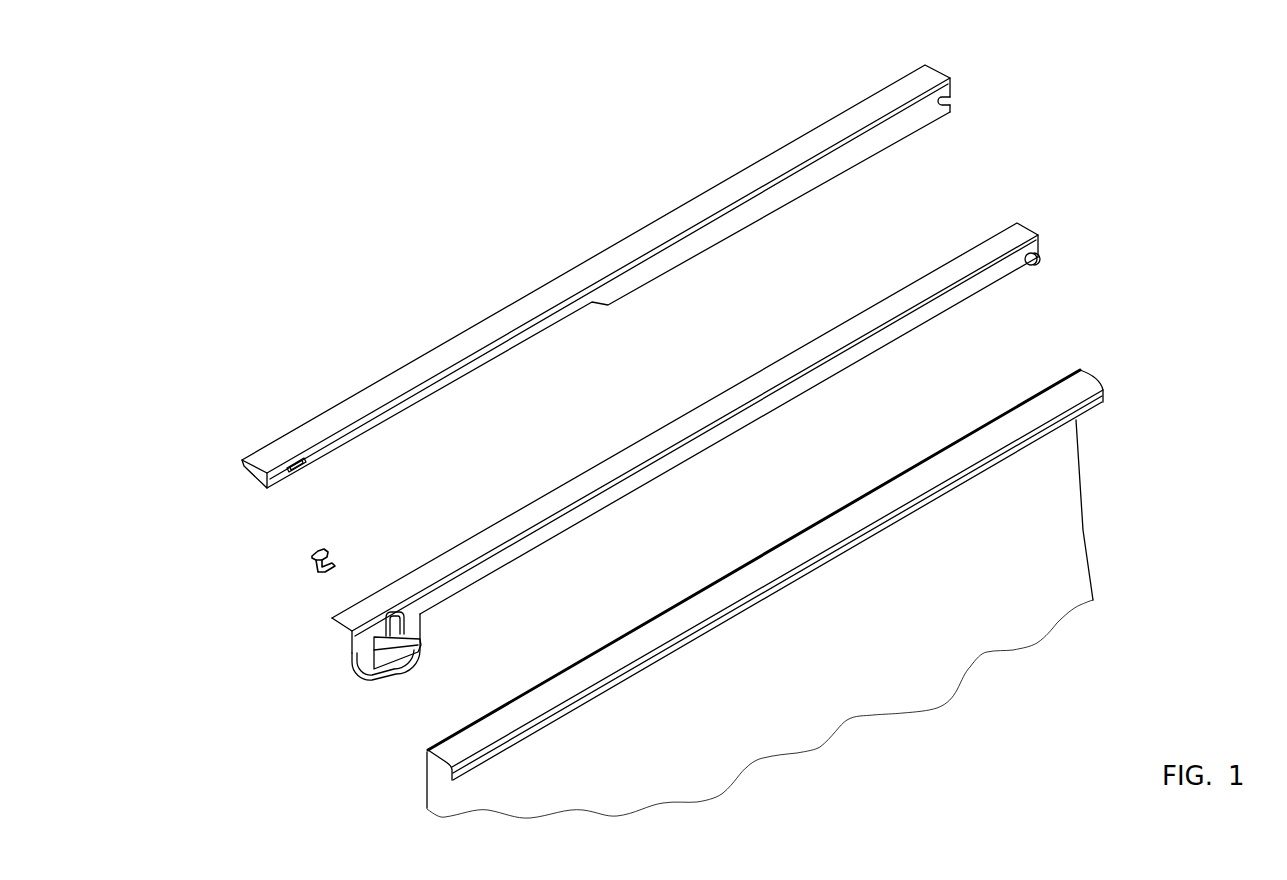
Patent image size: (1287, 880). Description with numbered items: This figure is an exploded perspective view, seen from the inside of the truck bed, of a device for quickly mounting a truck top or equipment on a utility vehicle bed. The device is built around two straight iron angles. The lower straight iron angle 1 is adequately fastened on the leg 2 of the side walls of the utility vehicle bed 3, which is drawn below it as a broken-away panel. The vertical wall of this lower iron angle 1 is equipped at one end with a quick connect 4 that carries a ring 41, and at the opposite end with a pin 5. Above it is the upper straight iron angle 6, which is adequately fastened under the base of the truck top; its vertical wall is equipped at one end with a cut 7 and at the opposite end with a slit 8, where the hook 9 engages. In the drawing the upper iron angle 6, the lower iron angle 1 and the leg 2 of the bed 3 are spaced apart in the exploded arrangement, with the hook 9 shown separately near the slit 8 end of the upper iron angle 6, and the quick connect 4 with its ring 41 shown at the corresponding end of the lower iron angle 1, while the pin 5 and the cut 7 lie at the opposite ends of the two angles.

The lower straight iron angle 1 is at (1015, 233).
The leg 2 is at (1077, 383).
The utility vehicle bed 3 is at (1030, 548).
The quick connect 4 is at (395, 652).
The ring 41 is at (382, 634).
The pin 5 is at (1040, 258).
The upper straight iron angle 6 is at (763, 175).
The cut 7 is at (945, 100).
The slit 8 is at (282, 480).
The hook 9 is at (315, 567).